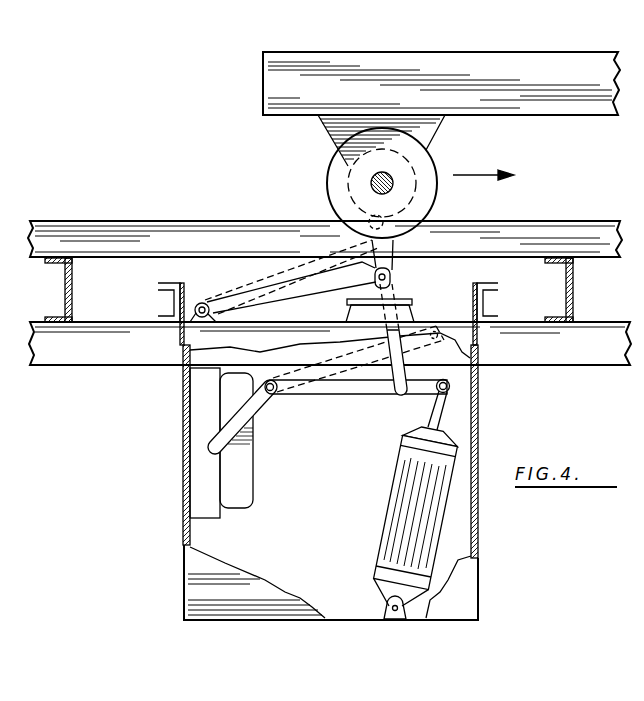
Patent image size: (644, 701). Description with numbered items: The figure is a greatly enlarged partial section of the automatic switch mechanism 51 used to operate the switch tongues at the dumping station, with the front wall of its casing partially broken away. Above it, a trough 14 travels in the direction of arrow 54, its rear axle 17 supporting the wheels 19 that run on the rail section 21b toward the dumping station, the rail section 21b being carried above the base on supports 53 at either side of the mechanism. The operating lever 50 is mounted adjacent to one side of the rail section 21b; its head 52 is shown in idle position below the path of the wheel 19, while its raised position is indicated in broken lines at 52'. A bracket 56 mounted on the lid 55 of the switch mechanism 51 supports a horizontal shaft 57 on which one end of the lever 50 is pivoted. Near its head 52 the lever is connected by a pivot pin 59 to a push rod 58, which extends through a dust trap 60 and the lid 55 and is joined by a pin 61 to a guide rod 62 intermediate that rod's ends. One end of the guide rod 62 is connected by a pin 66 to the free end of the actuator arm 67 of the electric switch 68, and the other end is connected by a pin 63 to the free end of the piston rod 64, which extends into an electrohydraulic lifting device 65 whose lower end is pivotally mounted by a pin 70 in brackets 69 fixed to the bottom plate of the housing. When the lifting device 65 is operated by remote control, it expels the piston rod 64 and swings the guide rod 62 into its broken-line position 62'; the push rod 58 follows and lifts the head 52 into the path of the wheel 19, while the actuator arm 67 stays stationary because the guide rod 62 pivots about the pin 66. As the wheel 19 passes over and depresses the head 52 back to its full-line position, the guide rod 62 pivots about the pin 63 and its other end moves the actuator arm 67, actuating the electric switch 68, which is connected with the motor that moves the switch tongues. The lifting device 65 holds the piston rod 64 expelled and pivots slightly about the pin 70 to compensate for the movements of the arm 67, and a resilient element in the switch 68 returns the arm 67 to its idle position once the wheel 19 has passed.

The trough 14 is at (465, 56).
The rear axle 17 is at (384, 176).
The wheel 19 is at (328, 183).
The rail section 21b is at (176, 217).
The operating lever 50 is at (250, 293).
The switch mechanism 51 is at (478, 534).
The head of lever 52 is at (403, 251).
The raised position of head 52' is at (392, 206).
The bracket 53 is at (158, 302).
The arrow 54 is at (470, 173).
The lid 55 is at (308, 320).
The bracket 56 is at (214, 314).
The horizontal shaft 57 is at (200, 305).
The push rod 58 is at (400, 292).
The pivot pin 59 is at (392, 276).
The dust trap 60 is at (414, 312).
The pin 61 is at (398, 396).
The guide rod 62 is at (356, 404).
The broken-line position of guide rod 62' is at (358, 377).
The pin 63 is at (443, 382).
The piston rod 64 is at (440, 416).
The electrohydraulic lifting device 65 is at (395, 500).
The pin 66 is at (270, 392).
The actuator arm 67 is at (240, 437).
The electric switch 68 is at (230, 518).
The bracket 69 is at (384, 610).
The pin 70 is at (398, 614).